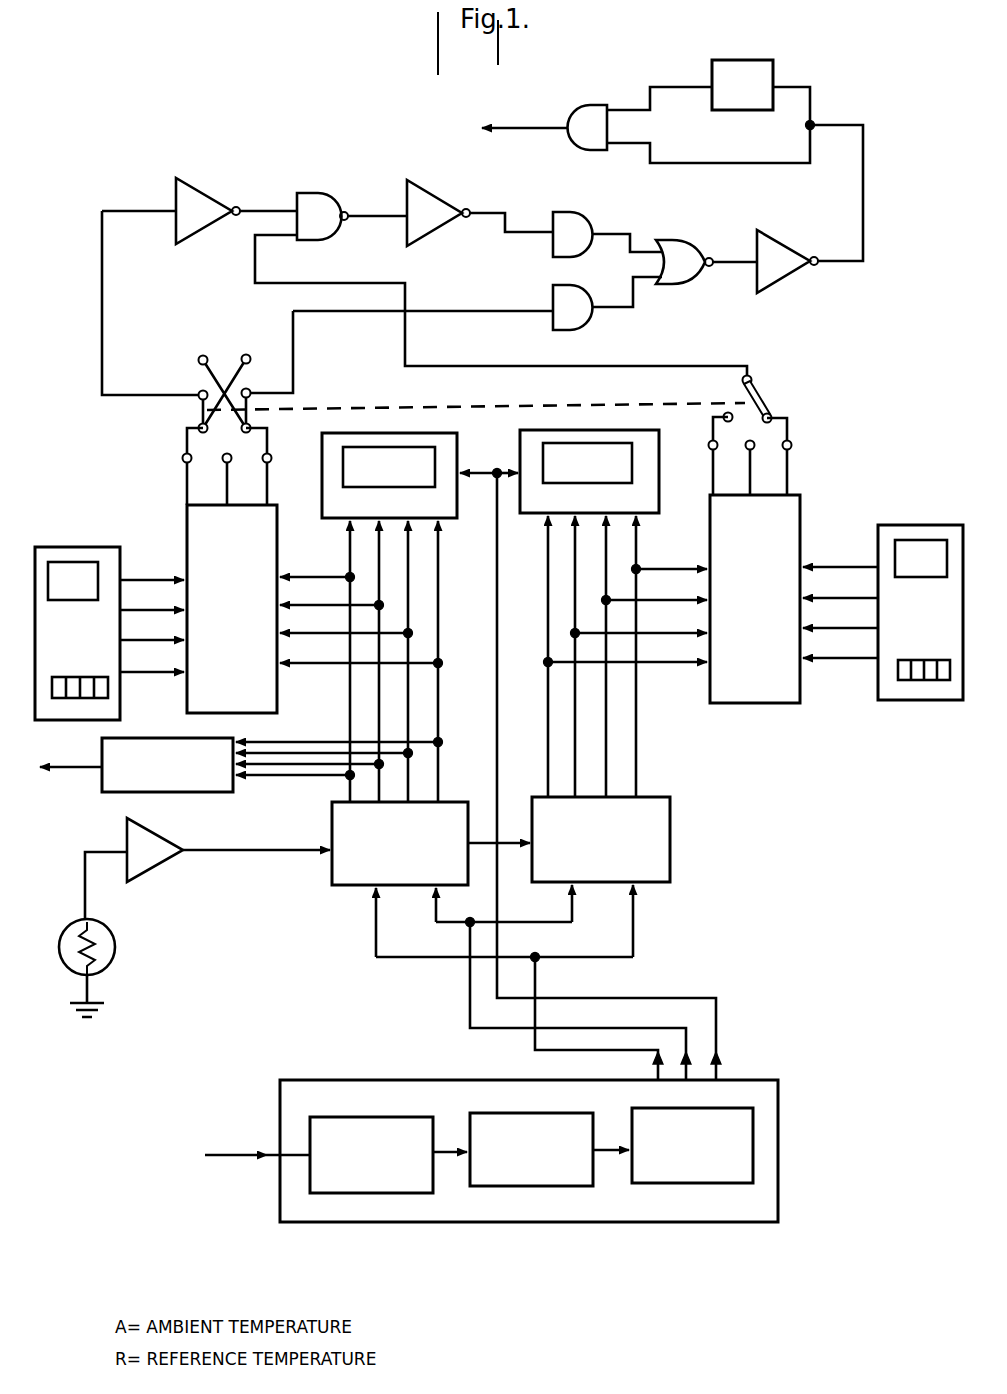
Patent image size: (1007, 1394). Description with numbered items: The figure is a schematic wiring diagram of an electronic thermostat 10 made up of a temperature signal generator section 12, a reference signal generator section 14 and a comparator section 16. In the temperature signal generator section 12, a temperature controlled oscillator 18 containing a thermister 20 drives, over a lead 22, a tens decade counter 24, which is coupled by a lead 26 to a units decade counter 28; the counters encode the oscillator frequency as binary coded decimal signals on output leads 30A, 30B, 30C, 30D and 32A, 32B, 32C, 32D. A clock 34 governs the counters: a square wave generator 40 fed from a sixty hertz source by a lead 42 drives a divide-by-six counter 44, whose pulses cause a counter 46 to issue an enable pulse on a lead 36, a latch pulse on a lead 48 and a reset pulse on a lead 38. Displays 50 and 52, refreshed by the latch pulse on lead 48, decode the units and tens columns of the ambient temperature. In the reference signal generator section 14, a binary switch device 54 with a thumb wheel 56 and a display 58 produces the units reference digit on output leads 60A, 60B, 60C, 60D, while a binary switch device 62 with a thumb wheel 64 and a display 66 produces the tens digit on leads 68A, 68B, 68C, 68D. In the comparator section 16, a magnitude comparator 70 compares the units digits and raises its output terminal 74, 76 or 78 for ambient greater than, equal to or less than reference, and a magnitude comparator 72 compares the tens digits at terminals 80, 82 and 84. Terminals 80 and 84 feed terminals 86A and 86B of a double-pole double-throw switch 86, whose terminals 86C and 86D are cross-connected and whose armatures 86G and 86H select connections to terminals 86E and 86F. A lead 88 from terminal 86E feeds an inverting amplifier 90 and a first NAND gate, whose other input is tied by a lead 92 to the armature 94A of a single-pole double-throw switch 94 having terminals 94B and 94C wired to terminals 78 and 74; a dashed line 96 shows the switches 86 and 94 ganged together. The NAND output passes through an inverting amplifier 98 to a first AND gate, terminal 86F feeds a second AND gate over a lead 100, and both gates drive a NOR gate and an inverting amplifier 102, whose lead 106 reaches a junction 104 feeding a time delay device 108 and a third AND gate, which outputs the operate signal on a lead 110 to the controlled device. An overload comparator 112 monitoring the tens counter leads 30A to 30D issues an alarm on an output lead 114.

The electronic thermostat 10 is at (714, 864).
The temperature signal generator section 12 is at (352, 896).
The reference signal generator section 14 is at (83, 540).
The comparator section 16 is at (477, 289).
The temperature controlled oscillator 18 is at (150, 871).
The thermister 20 is at (104, 934).
The lead 22 is at (227, 853).
The tens decade counter 24 is at (333, 886).
The lead 26 is at (512, 834).
The units decade counter 28 is at (672, 834).
The output lead 30A is at (439, 693).
The output lead 30B is at (409, 722).
The output lead 30C is at (378, 686).
The output lead 30D is at (349, 715).
The output lead 32A is at (638, 700).
The output lead 32B is at (606, 726).
The output lead 32C is at (575, 728).
The output lead 32D is at (548, 750).
The clock 34 is at (529, 1175).
The lead 36 is at (470, 1004).
The lead 38 is at (535, 1051).
The square wave generator 40 is at (369, 1117).
The lead 42 is at (236, 1150).
The counter 44 is at (565, 1113).
The counter 46 is at (650, 1183).
The lead 48 is at (501, 903).
The display 50 is at (662, 452).
The display 52 is at (459, 455).
The binary switch device 54 is at (920, 602).
The thumb wheel 56 is at (920, 680).
The display 58 is at (910, 540).
The output lead 60A is at (846, 566).
The output lead 60B is at (850, 591).
The output lead 60C is at (850, 621).
The output lead 60D is at (850, 651).
The binary switch device 62 is at (76, 632).
The thumb wheel 64 is at (90, 698).
The display 66 is at (87, 562).
The lead 68A is at (152, 579).
The lead 68B is at (152, 609).
The lead 68C is at (152, 639).
The lead 68D is at (152, 671).
The magnitude comparator 70 is at (803, 532).
The magnitude comparator 72 is at (279, 532).
The output terminal 74 is at (709, 449).
The output terminal 76 is at (746, 446).
The output terminal 78 is at (792, 444).
The terminal 80 is at (182, 460).
The output terminal 82 is at (227, 453).
The terminal 84 is at (272, 460).
The double-pole double-throw switch 86 is at (237, 377).
The terminal 86A is at (199, 430).
The terminal 86B is at (251, 430).
The terminal 86C is at (198, 360).
The terminal 86D is at (251, 359).
The terminal 86E is at (200, 393).
The terminal 86F is at (249, 391).
The switch armature 86G is at (205, 409).
The switch armature 86H is at (257, 406).
The lead 88 is at (140, 211).
The inverting amplifier 90 is at (203, 200).
The lead 92 is at (348, 283).
The single-pole double-throw switch 94 is at (762, 382).
The armature 94A is at (757, 399).
The terminal 94B is at (772, 418).
The terminal 94C is at (727, 412).
The dashed line 96 is at (559, 409).
The inverting amplifier 98 is at (434, 230).
The lead 100 is at (505, 306).
The inverting amplifier 102 is at (783, 248).
The junction 104 is at (816, 122).
The lead 106 is at (866, 162).
The time delay device 108 is at (773, 63).
The lead 110 is at (512, 126).
The overload comparator 112 is at (133, 793).
The output lead 114 is at (88, 765).